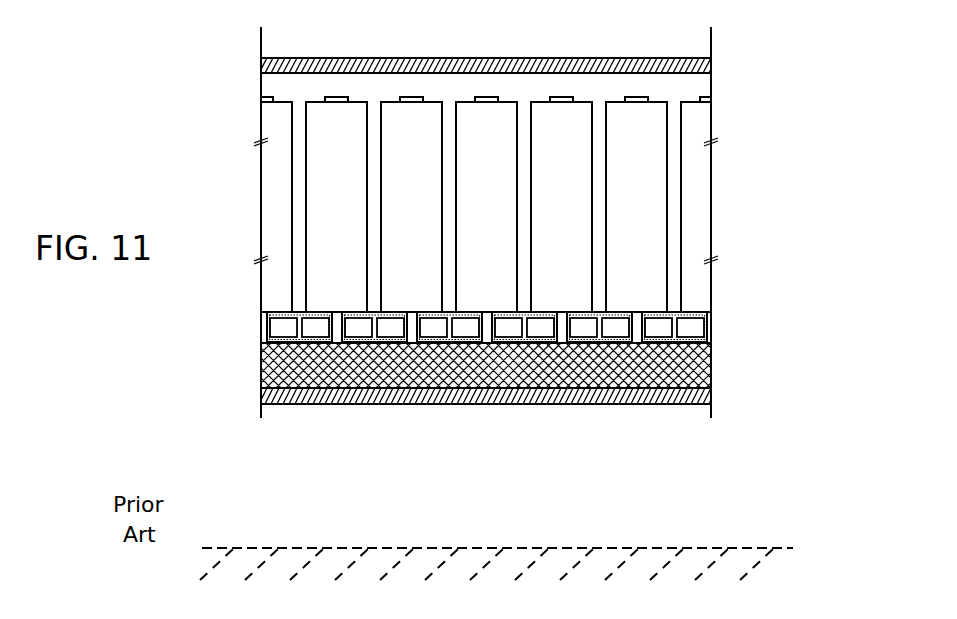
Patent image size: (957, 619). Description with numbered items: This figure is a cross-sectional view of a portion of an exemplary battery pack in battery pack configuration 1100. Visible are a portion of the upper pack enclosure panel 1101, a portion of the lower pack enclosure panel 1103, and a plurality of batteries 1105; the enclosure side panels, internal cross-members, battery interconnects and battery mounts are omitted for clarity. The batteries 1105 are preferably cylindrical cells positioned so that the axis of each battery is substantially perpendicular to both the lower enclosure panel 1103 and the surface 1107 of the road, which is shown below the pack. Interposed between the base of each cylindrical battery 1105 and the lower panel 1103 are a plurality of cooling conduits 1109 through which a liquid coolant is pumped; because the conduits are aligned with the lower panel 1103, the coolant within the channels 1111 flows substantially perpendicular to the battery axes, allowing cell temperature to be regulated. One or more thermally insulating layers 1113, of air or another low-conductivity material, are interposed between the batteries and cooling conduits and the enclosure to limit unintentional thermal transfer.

The battery pack configuration 1100 is at (760, 47).
The upper pack enclosure panel 1101 is at (384, 62).
The lower pack enclosure panel 1103 is at (532, 393).
The batteries 1105 is at (363, 209).
The surface of the road 1107 is at (475, 545).
The cooling conduits 1109 is at (373, 313).
The channels 1111 is at (583, 327).
The thermally insulating layers 1113 is at (262, 372).